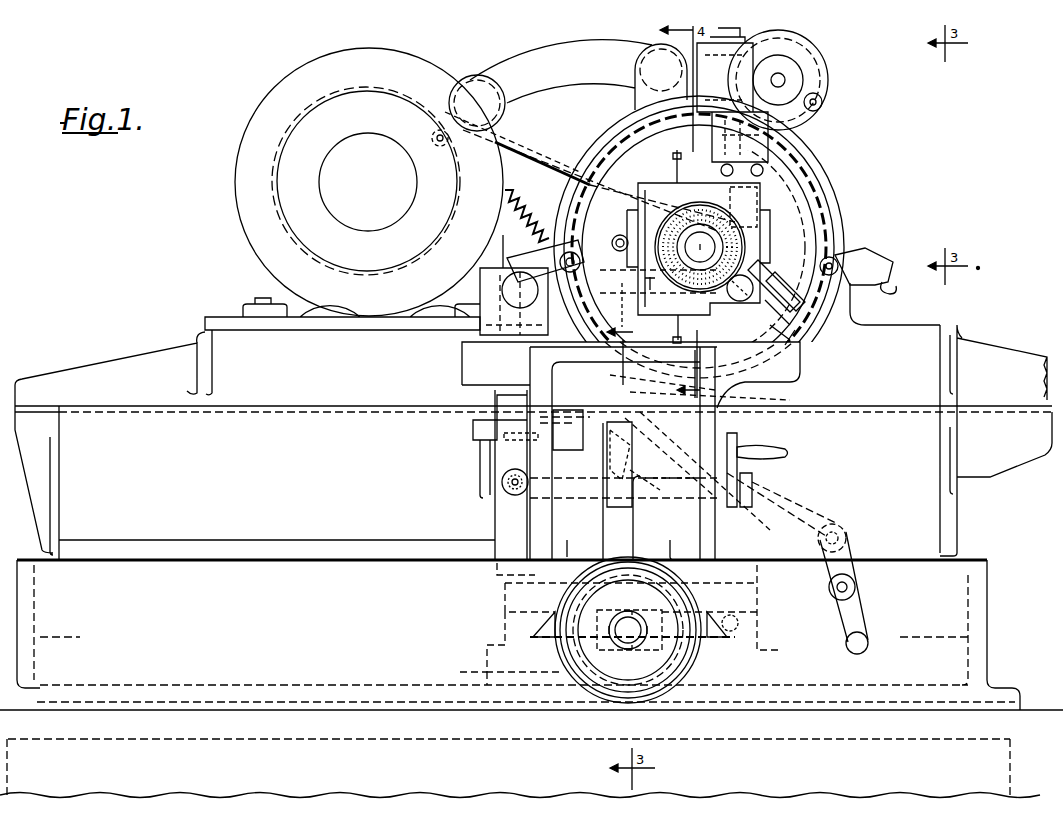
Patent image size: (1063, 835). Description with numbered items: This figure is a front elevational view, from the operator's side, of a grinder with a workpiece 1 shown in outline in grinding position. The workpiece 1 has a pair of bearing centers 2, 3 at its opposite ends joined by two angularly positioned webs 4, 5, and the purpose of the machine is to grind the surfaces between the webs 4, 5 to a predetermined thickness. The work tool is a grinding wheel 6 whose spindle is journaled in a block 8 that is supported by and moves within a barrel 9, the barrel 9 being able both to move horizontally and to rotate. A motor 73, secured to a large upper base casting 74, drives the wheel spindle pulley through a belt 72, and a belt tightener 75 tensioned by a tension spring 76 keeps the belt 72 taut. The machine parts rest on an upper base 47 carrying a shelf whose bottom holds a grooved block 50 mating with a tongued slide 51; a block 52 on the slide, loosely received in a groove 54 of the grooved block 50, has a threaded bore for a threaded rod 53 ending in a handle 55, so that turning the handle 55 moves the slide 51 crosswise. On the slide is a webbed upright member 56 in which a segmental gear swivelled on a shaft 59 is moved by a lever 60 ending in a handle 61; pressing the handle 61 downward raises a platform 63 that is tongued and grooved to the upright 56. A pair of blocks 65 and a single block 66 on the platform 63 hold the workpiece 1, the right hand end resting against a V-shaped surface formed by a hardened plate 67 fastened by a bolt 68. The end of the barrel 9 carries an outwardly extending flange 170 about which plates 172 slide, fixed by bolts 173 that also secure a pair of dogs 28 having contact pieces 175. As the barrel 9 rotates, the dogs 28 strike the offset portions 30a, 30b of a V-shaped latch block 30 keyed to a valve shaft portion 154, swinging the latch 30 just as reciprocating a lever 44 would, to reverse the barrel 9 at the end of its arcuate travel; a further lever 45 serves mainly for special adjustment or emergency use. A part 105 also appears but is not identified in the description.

The workpiece 1 is at (695, 247).
The center 2 is at (520, 262).
The center 3 is at (742, 302).
The web 4 is at (653, 316).
The web 5 is at (625, 334).
The grinding wheel 6 is at (715, 217).
The block 8 is at (660, 190).
The barrel 9 is at (785, 194).
The dog 28 is at (869, 263).
The V-shaped block 30 is at (616, 422).
The latch portion 30a is at (604, 448).
The latch portion 30b is at (648, 440).
The lever 44 is at (796, 508).
The lever 45 is at (852, 622).
The upper base 47 is at (978, 603).
The grooved block 50 is at (510, 645).
The tongued slide 51 is at (505, 592).
The block 52 is at (624, 612).
The threaded rod 53 is at (626, 640).
The groove 54 is at (565, 655).
The handle 55 is at (675, 592).
The webbed upright member 56 is at (690, 432).
The shaft 59 is at (592, 495).
The lever 60 is at (738, 448).
The handle 61 is at (780, 455).
The platform 63 is at (470, 370).
The blocks 65 is at (480, 330).
The block 66 is at (800, 338).
The hardened plate 67 is at (760, 275).
The bolt 68 is at (782, 284).
The belt 72 is at (545, 157).
The motor 73 is at (250, 152).
The upper base casting 74 is at (135, 375).
The belt tightener 75 is at (570, 66).
The tension spring 76 is at (548, 210).
The disc 105 is at (817, 68).
The shaft portion 154 is at (665, 473).
The flange 170 is at (810, 172).
The plates 172 is at (840, 228).
The bolts 173 is at (838, 260).
The contact pieces 175 is at (906, 292).